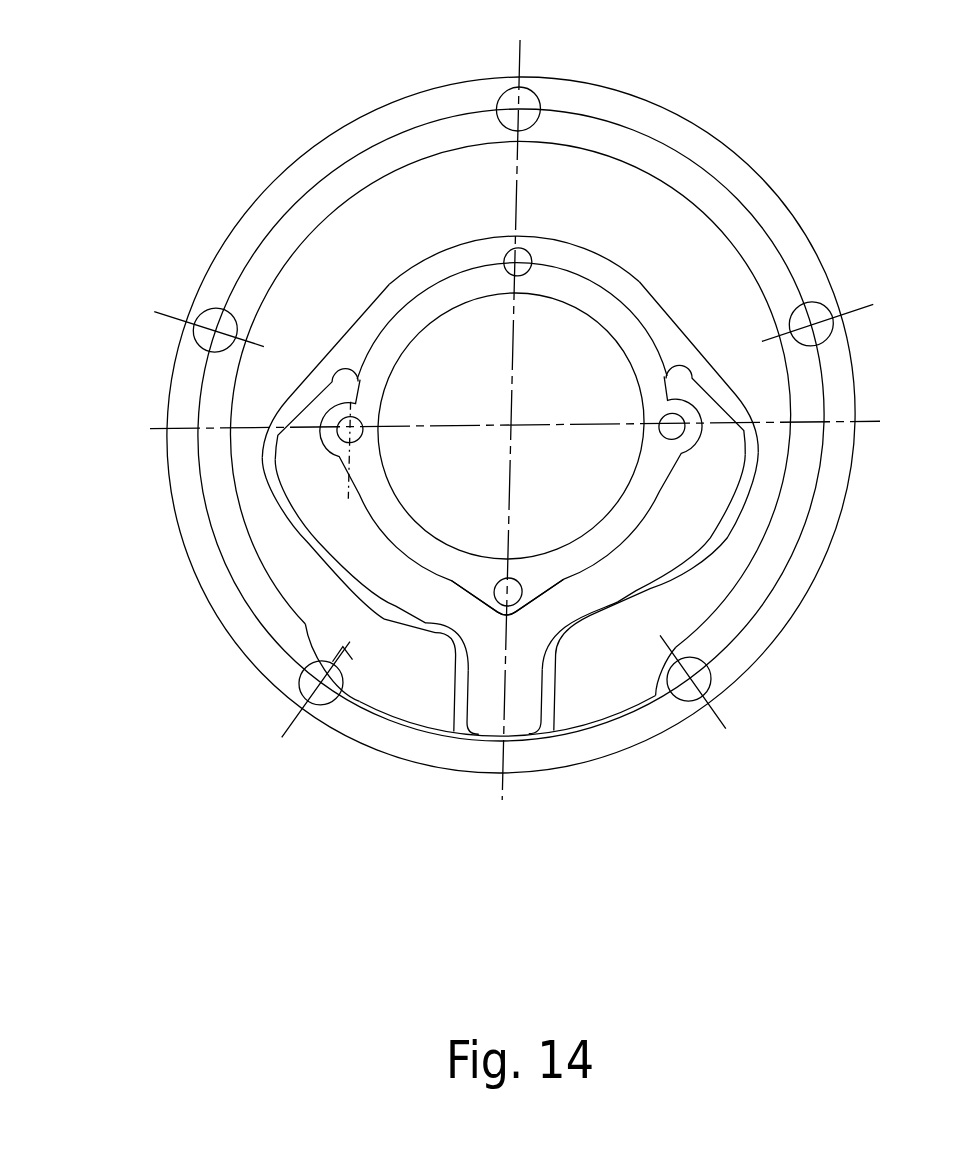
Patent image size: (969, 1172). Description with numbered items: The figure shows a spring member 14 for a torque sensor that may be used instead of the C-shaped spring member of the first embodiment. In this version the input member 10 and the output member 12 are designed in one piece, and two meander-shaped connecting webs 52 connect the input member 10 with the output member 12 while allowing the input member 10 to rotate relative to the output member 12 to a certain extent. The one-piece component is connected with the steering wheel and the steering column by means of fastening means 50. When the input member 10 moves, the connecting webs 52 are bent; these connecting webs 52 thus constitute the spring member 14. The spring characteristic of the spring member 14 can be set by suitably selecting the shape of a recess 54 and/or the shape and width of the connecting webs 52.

The input member 10 is at (443, 270).
The output member 12 is at (193, 448).
The spring member 14 is at (290, 510).
The fastening means 50 is at (205, 312).
The connecting webs 52 is at (318, 549).
The recess 54 is at (528, 663).